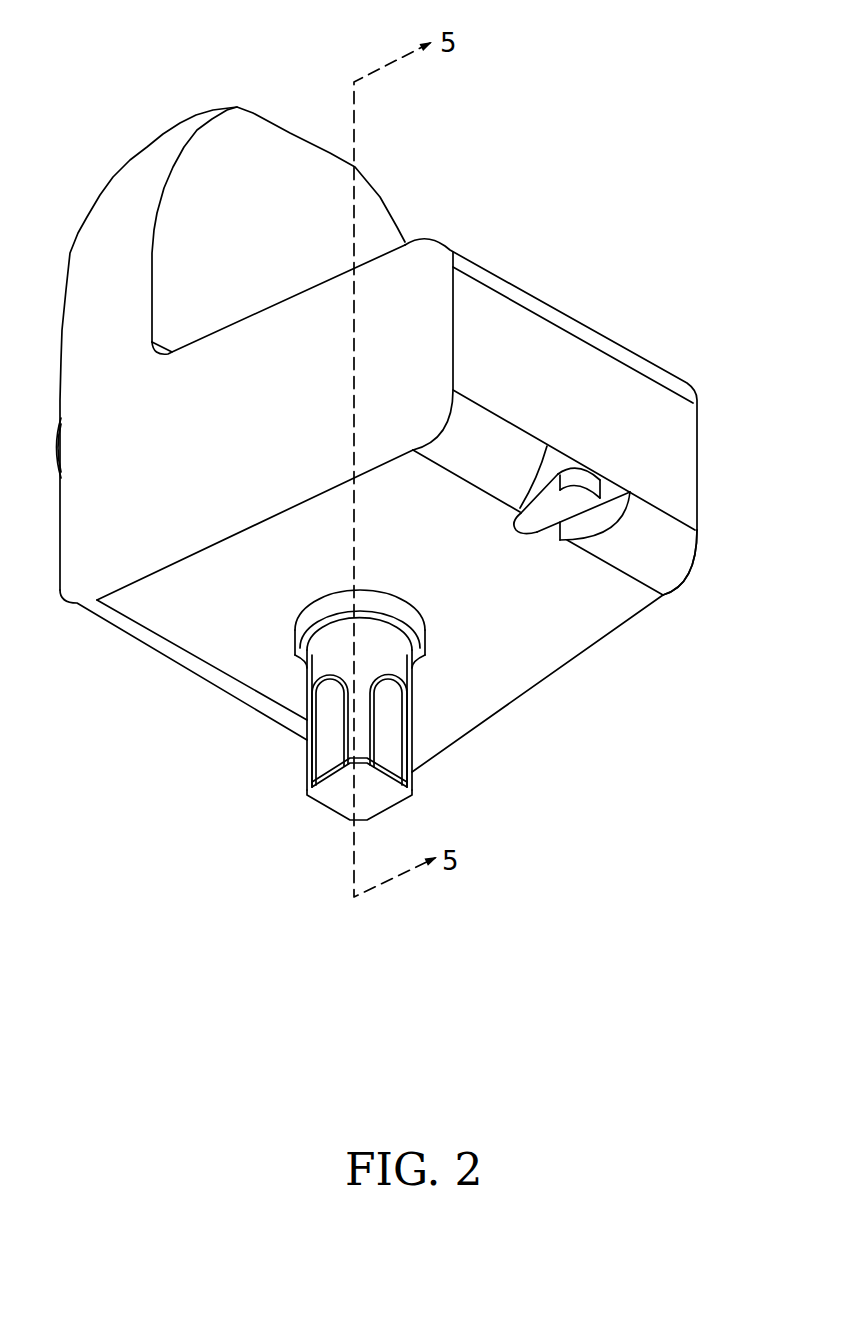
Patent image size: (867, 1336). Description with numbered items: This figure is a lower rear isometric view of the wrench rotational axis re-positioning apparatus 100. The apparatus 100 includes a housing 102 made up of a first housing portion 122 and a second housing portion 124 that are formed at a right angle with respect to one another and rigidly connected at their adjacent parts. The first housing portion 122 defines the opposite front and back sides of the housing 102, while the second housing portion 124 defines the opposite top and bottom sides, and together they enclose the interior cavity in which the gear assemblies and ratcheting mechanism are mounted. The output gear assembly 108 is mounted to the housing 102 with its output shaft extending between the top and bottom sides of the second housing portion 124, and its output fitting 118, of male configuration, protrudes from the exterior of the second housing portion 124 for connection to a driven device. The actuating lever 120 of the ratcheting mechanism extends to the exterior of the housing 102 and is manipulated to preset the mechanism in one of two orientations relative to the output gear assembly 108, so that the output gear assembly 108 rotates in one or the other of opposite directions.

The wrench rotational axis re-positioning apparatus 100 is at (506, 97).
The housing 102 is at (408, 240).
The output gear assembly 108 is at (302, 756).
The output fitting 118 is at (333, 800).
The actuating lever 120 is at (592, 484).
The first housing portion 122 is at (254, 127).
The second housing portion 124 is at (598, 633).